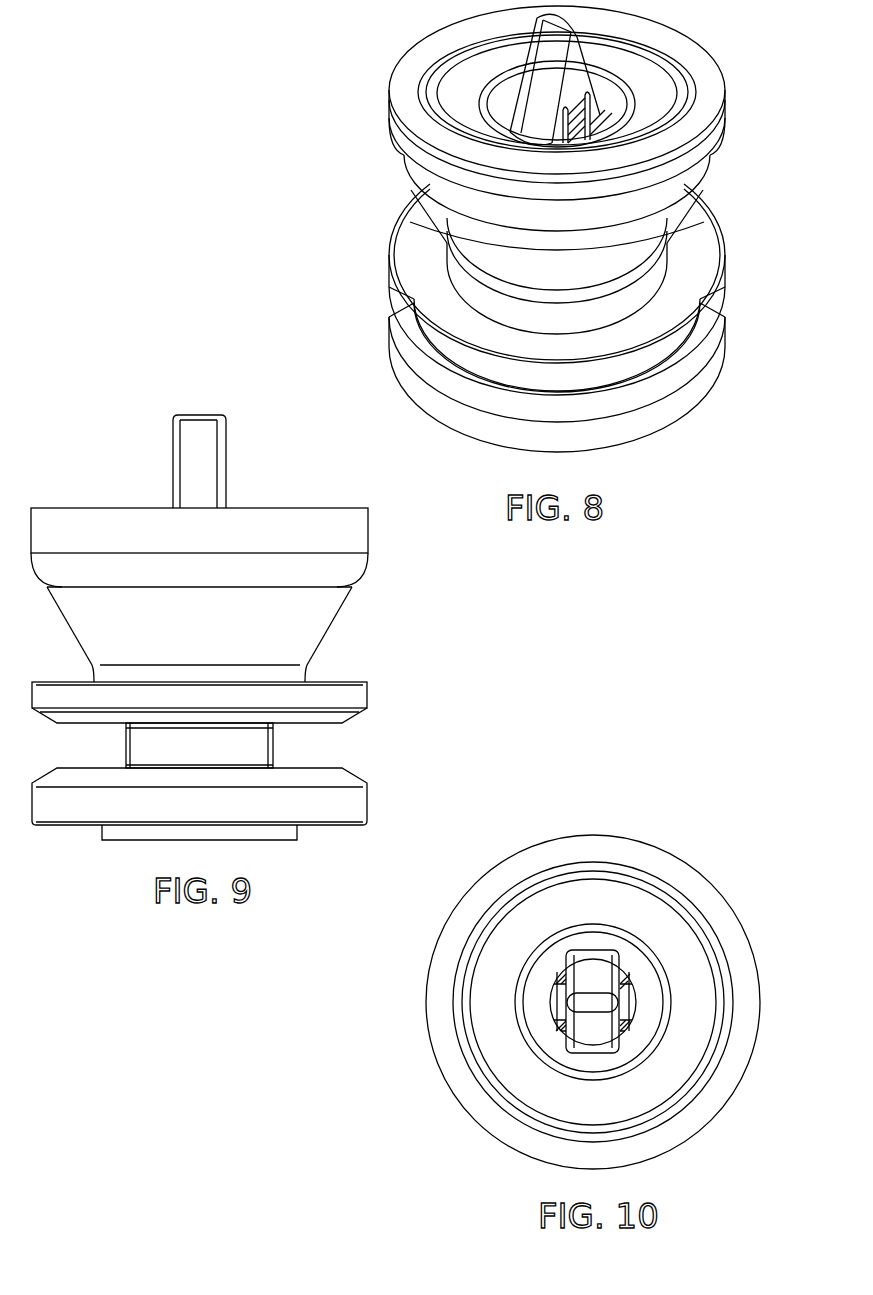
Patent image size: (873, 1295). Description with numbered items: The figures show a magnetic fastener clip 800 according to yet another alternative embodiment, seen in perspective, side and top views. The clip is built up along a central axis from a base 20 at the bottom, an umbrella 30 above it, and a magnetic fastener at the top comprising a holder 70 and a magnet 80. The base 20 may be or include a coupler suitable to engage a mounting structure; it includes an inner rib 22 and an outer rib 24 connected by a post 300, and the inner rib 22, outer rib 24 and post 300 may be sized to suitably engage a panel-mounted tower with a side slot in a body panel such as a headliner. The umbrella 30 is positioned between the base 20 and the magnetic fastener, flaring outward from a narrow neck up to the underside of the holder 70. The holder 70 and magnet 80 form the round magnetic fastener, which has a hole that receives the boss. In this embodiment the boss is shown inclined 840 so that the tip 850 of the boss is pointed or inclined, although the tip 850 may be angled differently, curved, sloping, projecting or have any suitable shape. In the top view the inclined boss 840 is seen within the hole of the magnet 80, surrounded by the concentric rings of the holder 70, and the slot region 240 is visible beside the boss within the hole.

In FIG. 8, the magnetic fastener clip 800 is at (555, 226).
In FIG. 9, the magnetic fastener clip 800 is at (248, 604).
In FIG. 10, the magnetic fastener clip 800 is at (587, 981).
In FIG. 8, the holder 70 is at (715, 145).
In FIG. 9, the holder 70 is at (357, 532).
In FIG. 10, the holder 70 is at (750, 1003).
In FIG. 8, the magnet 80 is at (640, 70).
In FIG. 10, the magnet 80 is at (687, 973).
In FIG. 8, the slot 240 is at (577, 118).
In FIG. 8, the inclined boss 840 is at (539, 72).
In FIG. 9, the inclined boss 840 is at (223, 438).
In FIG. 10, the inclined boss 840 is at (592, 965).
In FIG. 8, the tip 850 is at (567, 32).
In FIG. 9, the tip 850 is at (194, 417).
In FIG. 8, the umbrella 30 is at (485, 255).
In FIG. 9, the umbrella 30 is at (320, 628).
In FIG. 8, the base 20 is at (603, 318).
In FIG. 9, the base 20 is at (243, 756).
In FIG. 8, the inner rib 22 is at (713, 229).
In FIG. 9, the inner rib 22 is at (357, 697).
In FIG. 8, the outer rib 24 is at (580, 377).
In FIG. 9, the outer rib 24 is at (218, 804).
In FIG. 9, the post 300 is at (262, 747).